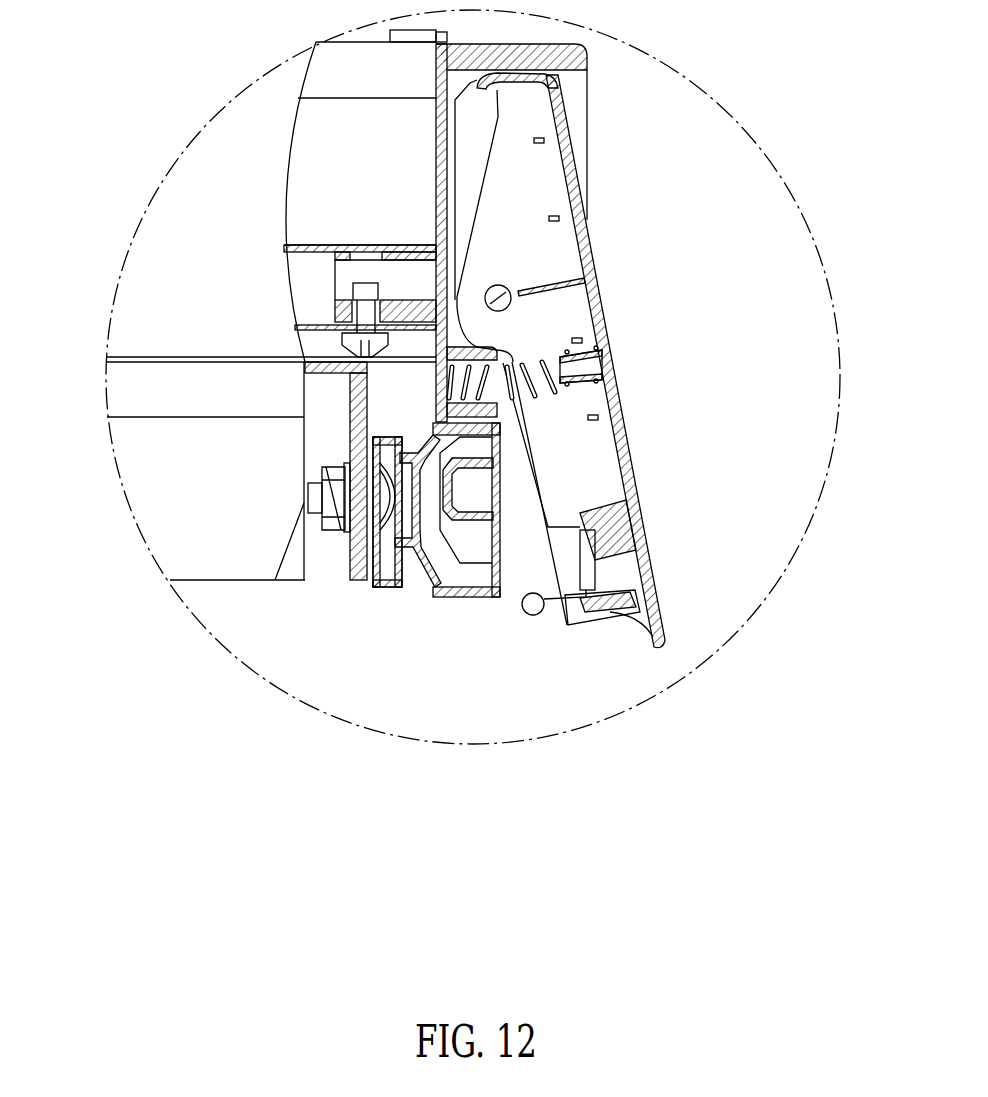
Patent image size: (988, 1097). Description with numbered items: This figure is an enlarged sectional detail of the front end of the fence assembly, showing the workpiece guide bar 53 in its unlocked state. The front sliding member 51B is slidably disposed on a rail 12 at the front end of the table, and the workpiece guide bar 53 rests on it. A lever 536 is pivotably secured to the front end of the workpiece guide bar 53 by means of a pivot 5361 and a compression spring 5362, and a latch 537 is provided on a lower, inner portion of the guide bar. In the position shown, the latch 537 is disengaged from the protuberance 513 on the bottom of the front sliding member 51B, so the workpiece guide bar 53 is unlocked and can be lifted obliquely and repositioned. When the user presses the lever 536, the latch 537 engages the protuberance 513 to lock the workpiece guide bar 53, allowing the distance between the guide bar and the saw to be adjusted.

The workpiece guide bar 53 is at (235, 165).
The rail 12 is at (347, 532).
The front sliding member 51B is at (437, 588).
The protuberance 513 is at (483, 598).
The lever 536 is at (630, 550).
The pivot 5361 is at (509, 289).
The compression spring 5362 is at (525, 368).
The latch 537 is at (540, 617).